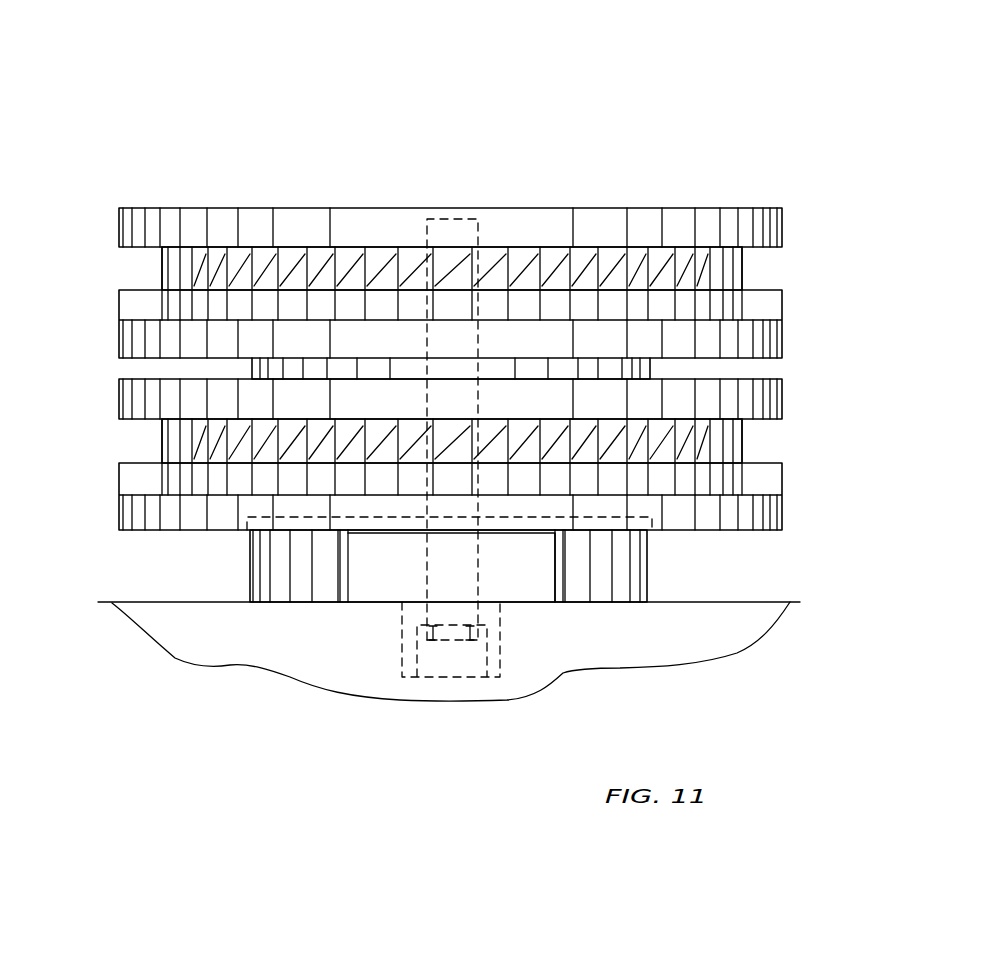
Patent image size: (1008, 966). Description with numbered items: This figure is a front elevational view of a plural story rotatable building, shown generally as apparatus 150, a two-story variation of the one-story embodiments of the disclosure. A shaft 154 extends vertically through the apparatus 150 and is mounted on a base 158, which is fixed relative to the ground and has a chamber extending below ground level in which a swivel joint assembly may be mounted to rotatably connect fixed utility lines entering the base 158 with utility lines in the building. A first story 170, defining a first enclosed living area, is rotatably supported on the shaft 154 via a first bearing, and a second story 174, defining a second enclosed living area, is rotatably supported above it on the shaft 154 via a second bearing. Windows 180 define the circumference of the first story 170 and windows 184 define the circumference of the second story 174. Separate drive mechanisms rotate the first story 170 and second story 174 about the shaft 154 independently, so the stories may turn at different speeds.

The apparatus 150 is at (361, 118).
The shaft 154 is at (460, 219).
The base 158 is at (638, 562).
The first story 170 is at (762, 435).
The second story 174 is at (762, 261).
The windows 180 is at (157, 443).
The windows 184 is at (157, 267).